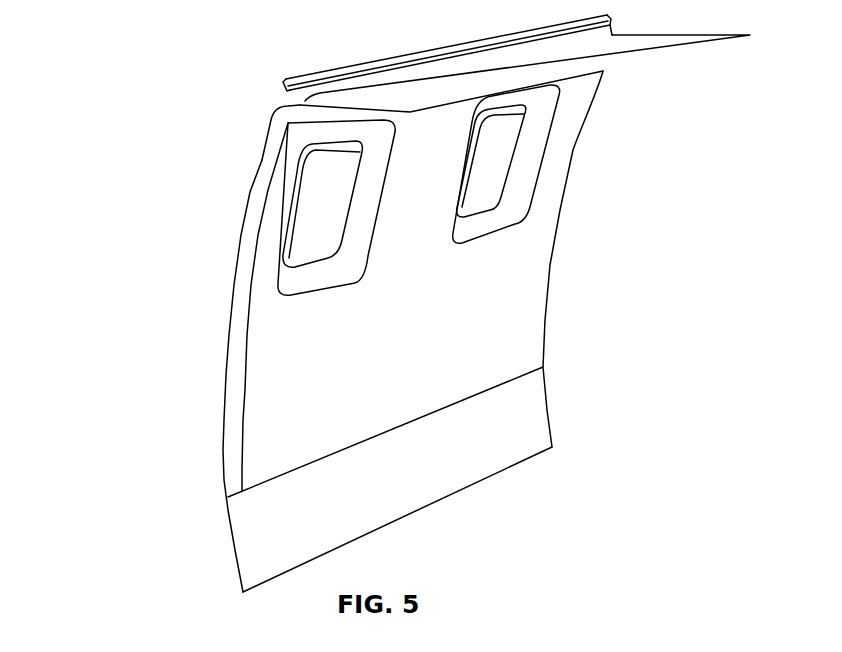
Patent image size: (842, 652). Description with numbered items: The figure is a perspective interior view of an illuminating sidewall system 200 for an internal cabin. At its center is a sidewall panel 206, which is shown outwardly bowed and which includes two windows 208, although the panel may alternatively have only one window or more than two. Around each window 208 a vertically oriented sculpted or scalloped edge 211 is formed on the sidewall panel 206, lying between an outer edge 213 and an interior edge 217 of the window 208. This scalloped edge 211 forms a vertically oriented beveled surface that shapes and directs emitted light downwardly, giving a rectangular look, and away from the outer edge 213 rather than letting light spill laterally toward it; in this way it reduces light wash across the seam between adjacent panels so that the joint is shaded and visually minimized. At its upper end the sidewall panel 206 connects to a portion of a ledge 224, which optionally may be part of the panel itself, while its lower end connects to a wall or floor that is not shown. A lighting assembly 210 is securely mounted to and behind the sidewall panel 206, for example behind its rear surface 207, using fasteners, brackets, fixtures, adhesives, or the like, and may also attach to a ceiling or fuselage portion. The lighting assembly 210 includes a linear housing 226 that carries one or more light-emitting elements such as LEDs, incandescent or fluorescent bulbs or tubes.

The illuminating sidewall system 200 is at (177, 78).
The sidewall panel 206 is at (226, 377).
The rear surface 207 is at (260, 160).
The window 208 is at (300, 227).
The lighting assembly 210 is at (530, 30).
The scalloped edge 211 is at (270, 208).
The outer edge 213 is at (240, 245).
The interior edge 217 is at (286, 206).
The ledge 224 is at (684, 35).
The linear housing 226 is at (320, 72).